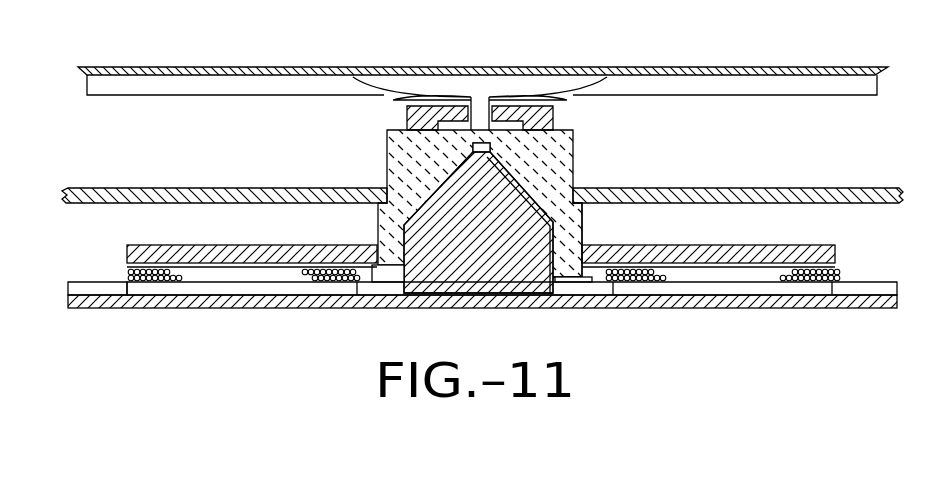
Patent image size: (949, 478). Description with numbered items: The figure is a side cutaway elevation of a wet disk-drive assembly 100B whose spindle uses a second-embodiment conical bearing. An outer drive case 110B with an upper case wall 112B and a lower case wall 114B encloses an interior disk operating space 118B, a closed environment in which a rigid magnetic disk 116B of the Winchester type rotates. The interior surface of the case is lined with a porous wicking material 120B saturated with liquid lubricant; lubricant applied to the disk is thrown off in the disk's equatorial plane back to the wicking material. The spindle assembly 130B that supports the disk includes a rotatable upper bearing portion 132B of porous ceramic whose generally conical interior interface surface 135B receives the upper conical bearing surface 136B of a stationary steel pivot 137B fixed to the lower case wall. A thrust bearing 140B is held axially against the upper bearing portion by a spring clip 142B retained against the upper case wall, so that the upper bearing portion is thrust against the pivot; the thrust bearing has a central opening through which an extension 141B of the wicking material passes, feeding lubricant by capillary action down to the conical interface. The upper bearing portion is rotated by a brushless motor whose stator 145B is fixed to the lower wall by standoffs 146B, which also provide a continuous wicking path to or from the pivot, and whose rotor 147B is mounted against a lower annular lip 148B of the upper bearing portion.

The disk-drive assembly 100B is at (793, 49).
The outer drive case 110B is at (430, 57).
The upper case wall 112B is at (255, 66).
The lower case wall 114B is at (172, 308).
The rigid magnetic disk 116B is at (240, 187).
The interior disk operating space 118B is at (148, 138).
The porous wicking material 120B is at (228, 95).
The spindle assembly 130B is at (641, 141).
The upper bearing portion 132B is at (575, 167).
The conical interior interface surface 135B is at (583, 211).
The upper conical bearing surface 136B is at (435, 200).
The stationary steel pivot 137B is at (523, 283).
The thrust bearing 140B is at (555, 113).
The extension of the wicking material 141B is at (483, 96).
The spring clip 142B is at (603, 74).
The stator 145B is at (840, 276).
The standoffs 146B is at (135, 283).
The rotor 147B is at (750, 245).
The lower annular lip 148B is at (392, 283).